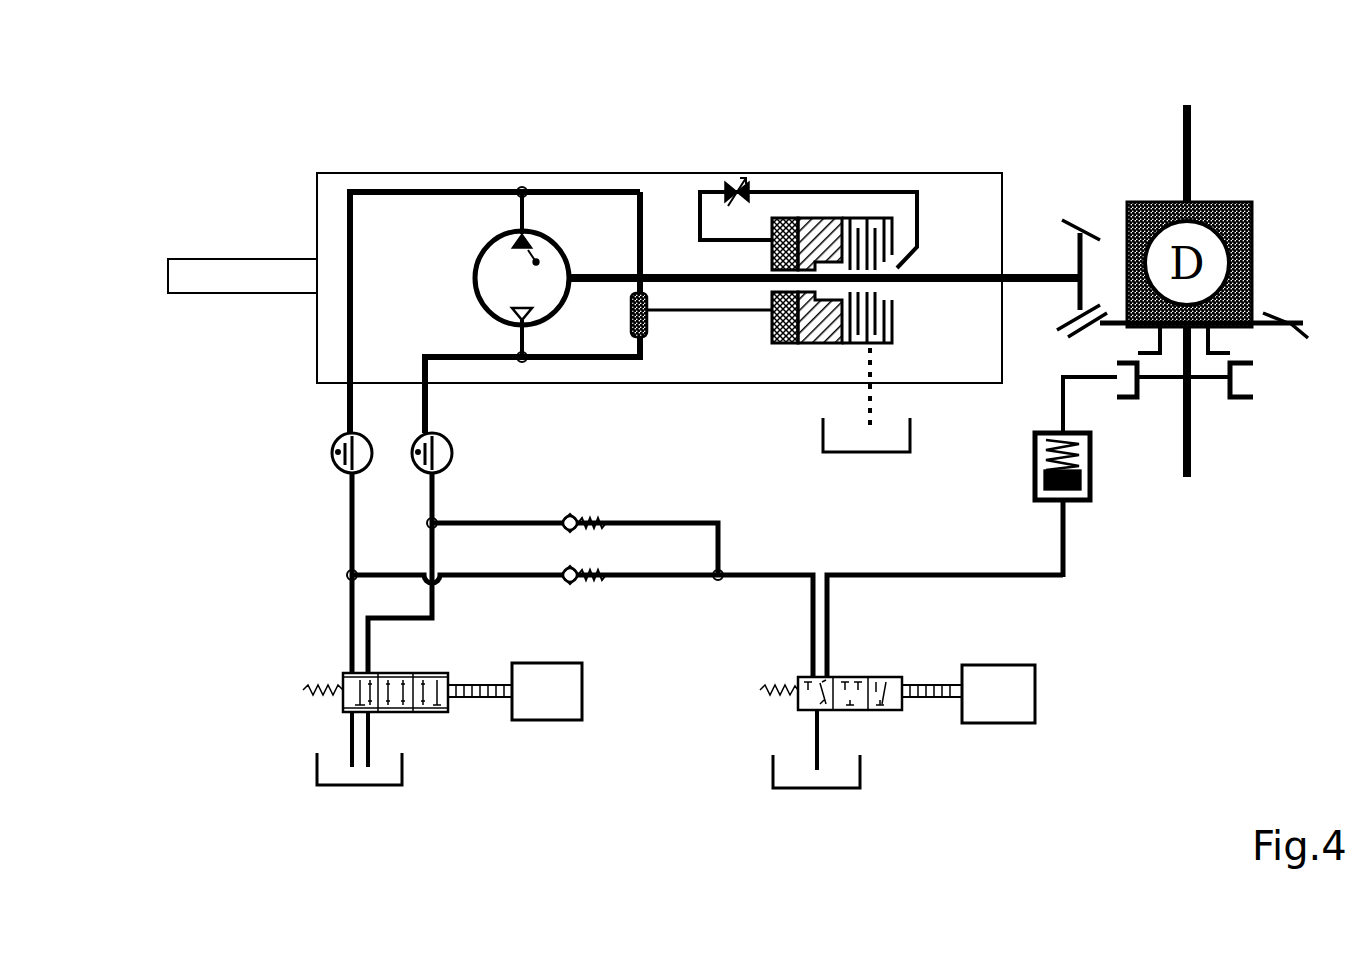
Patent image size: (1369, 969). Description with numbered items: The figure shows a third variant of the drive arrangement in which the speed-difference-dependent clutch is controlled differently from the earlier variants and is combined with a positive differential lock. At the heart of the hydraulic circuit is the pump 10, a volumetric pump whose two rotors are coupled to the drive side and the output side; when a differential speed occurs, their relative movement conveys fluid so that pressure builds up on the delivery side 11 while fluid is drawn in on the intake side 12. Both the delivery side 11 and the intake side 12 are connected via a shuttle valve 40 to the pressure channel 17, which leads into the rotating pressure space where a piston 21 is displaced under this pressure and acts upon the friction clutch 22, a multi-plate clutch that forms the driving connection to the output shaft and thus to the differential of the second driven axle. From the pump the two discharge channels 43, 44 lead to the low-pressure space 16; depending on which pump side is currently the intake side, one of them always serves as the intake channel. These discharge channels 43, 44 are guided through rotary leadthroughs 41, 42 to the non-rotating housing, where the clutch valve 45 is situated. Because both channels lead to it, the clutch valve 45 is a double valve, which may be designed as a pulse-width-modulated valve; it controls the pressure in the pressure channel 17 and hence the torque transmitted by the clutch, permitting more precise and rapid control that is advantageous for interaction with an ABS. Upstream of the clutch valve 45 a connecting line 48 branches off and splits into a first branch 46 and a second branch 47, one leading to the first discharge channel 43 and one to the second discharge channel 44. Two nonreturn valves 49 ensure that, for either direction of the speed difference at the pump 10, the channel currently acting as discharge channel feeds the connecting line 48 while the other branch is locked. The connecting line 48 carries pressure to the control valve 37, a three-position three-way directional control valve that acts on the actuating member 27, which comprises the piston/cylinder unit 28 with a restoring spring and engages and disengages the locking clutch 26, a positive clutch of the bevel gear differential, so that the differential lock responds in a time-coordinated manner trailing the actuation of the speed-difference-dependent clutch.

The pump 10 is at (521, 232).
The delivery side 11 is at (525, 190).
The intake side 12 is at (522, 355).
The low-pressure space 16 is at (358, 775).
The pressure channel 17 is at (715, 308).
The piston 21 is at (826, 225).
The friction clutch 22 is at (886, 220).
The locking clutch 26 is at (1243, 377).
The actuating member 27 is at (1070, 422).
The piston/cylinder unit 28 is at (1097, 498).
The control valve 37 is at (892, 695).
The shuttle valve 40 is at (641, 290).
The rotary leadthrough 41 is at (338, 452).
The rotary leadthrough 42 is at (415, 458).
The first discharge channel 43 is at (347, 405).
The second discharge channel 44 is at (433, 503).
The clutch valve 45 is at (357, 688).
The first branch 46 is at (527, 578).
The second branch 47 is at (492, 525).
The connecting line 48 is at (935, 575).
The nonreturn valves 49 is at (572, 580).